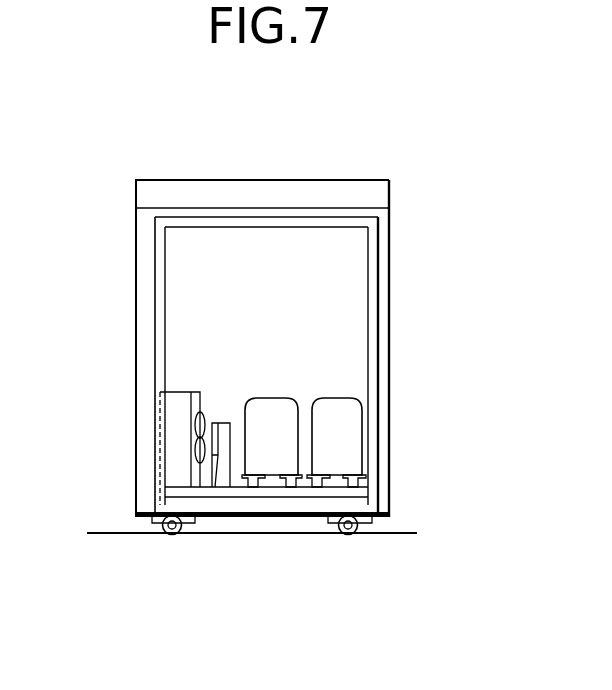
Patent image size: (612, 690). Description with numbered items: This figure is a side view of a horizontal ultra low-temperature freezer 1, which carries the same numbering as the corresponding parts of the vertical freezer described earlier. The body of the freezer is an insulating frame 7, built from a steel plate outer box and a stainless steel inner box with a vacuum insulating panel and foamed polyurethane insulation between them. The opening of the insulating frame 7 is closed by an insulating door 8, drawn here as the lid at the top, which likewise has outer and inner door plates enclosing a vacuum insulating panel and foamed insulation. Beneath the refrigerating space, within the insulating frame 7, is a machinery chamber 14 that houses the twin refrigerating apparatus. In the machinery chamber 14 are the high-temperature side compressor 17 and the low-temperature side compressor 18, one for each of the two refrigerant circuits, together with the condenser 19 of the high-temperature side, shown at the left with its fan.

The ultra low-temperature freezer 1 is at (355, 428).
The insulating frame 7 is at (135, 278).
The insulating door 8 is at (327, 182).
The machinery chamber 14 is at (353, 362).
The high-temperature side compressor 17 is at (278, 468).
The low-temperature side compressor 18 is at (340, 468).
The condenser 19 is at (173, 442).